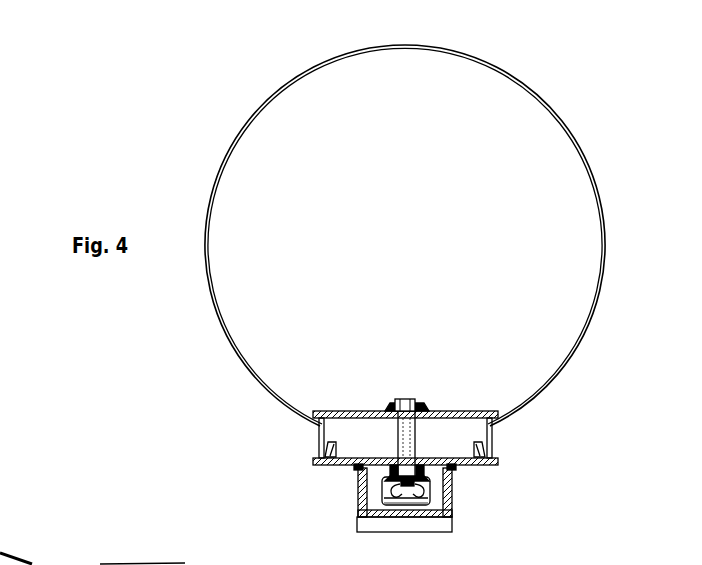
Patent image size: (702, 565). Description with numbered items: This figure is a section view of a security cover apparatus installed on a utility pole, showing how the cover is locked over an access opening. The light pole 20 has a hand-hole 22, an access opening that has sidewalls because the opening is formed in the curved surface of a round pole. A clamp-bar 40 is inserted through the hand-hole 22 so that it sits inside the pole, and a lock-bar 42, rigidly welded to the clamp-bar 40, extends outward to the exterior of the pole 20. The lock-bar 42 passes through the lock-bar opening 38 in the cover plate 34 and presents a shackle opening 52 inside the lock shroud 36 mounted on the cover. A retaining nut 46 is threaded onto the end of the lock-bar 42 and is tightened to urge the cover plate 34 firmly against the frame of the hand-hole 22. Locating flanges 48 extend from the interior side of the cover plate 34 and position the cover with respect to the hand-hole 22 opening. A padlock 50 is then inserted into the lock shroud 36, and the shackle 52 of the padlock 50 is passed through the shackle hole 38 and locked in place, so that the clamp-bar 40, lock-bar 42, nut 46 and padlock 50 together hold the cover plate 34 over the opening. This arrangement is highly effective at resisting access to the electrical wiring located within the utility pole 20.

The light pole 20 is at (208, 286).
The hand-hole 22 is at (318, 438).
The cover plate 34 is at (458, 468).
The lock shroud 36 is at (450, 508).
The lock-bar opening 38 is at (398, 456).
The clamp-bar 40 is at (350, 410).
The lock-bar 42 is at (414, 400).
The retaining nut 46 is at (425, 476).
The locating flanges 48 is at (477, 448).
The padlock 50 is at (358, 510).
The shackle opening 52 is at (382, 488).